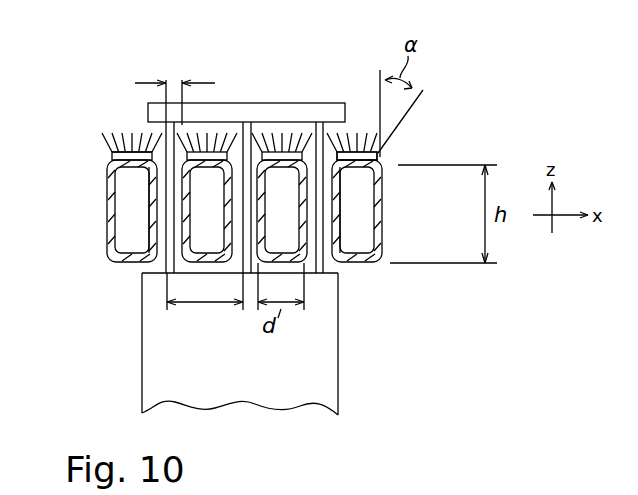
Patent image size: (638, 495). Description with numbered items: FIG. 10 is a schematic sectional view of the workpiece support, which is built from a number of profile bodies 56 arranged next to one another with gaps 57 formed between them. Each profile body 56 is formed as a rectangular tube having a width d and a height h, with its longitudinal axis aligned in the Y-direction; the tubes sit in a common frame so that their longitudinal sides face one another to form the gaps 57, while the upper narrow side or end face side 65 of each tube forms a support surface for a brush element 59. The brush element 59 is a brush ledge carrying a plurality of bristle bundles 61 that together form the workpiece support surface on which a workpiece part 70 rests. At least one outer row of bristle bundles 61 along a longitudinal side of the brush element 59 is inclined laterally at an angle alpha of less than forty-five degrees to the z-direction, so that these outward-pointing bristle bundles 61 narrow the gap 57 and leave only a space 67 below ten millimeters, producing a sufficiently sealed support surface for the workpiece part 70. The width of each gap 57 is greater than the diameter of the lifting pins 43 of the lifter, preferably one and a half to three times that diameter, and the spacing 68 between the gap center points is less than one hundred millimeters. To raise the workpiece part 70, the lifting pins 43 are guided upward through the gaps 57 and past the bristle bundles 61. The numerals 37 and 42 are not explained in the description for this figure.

The brush unit 37 is at (350, 347).
The base body 42 is at (322, 378).
The lifting pin 43 is at (330, 266).
The profile body 56 is at (380, 200).
The gap 57 is at (158, 234).
The brush element 59 is at (375, 157).
The bristle bundle 61 is at (387, 127).
The end face side 65 is at (127, 157).
The space 67 is at (167, 80).
The spacing 68 is at (207, 302).
The workpiece part 70 is at (236, 112).